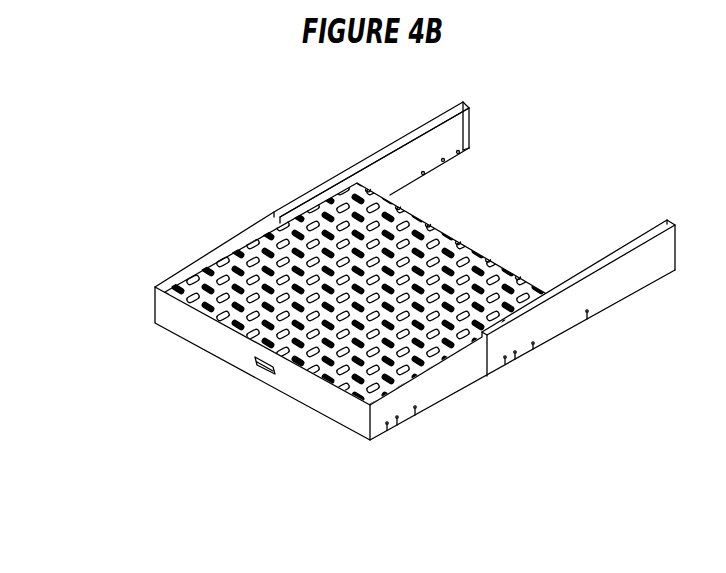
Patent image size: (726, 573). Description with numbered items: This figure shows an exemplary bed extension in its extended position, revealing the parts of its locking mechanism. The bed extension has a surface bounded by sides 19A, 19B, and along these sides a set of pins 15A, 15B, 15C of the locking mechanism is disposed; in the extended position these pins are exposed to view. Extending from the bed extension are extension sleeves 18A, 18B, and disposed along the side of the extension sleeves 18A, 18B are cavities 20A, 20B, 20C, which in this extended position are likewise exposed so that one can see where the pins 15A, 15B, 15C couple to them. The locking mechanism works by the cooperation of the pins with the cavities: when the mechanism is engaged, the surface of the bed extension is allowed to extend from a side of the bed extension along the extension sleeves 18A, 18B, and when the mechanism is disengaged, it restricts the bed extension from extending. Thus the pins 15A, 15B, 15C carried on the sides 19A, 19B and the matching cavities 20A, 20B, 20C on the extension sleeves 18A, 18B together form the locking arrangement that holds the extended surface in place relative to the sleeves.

The pin 15A is at (505, 364).
The pin 15B is at (515, 358).
The pin 15C is at (533, 349).
The extension sleeve 18A is at (587, 318).
The extension sleeve 18B is at (417, 180).
The side 19A is at (457, 391).
The side 19B is at (222, 250).
The cavity 20A is at (387, 430).
The cavity 20B is at (397, 425).
The cavity 20C is at (415, 415).